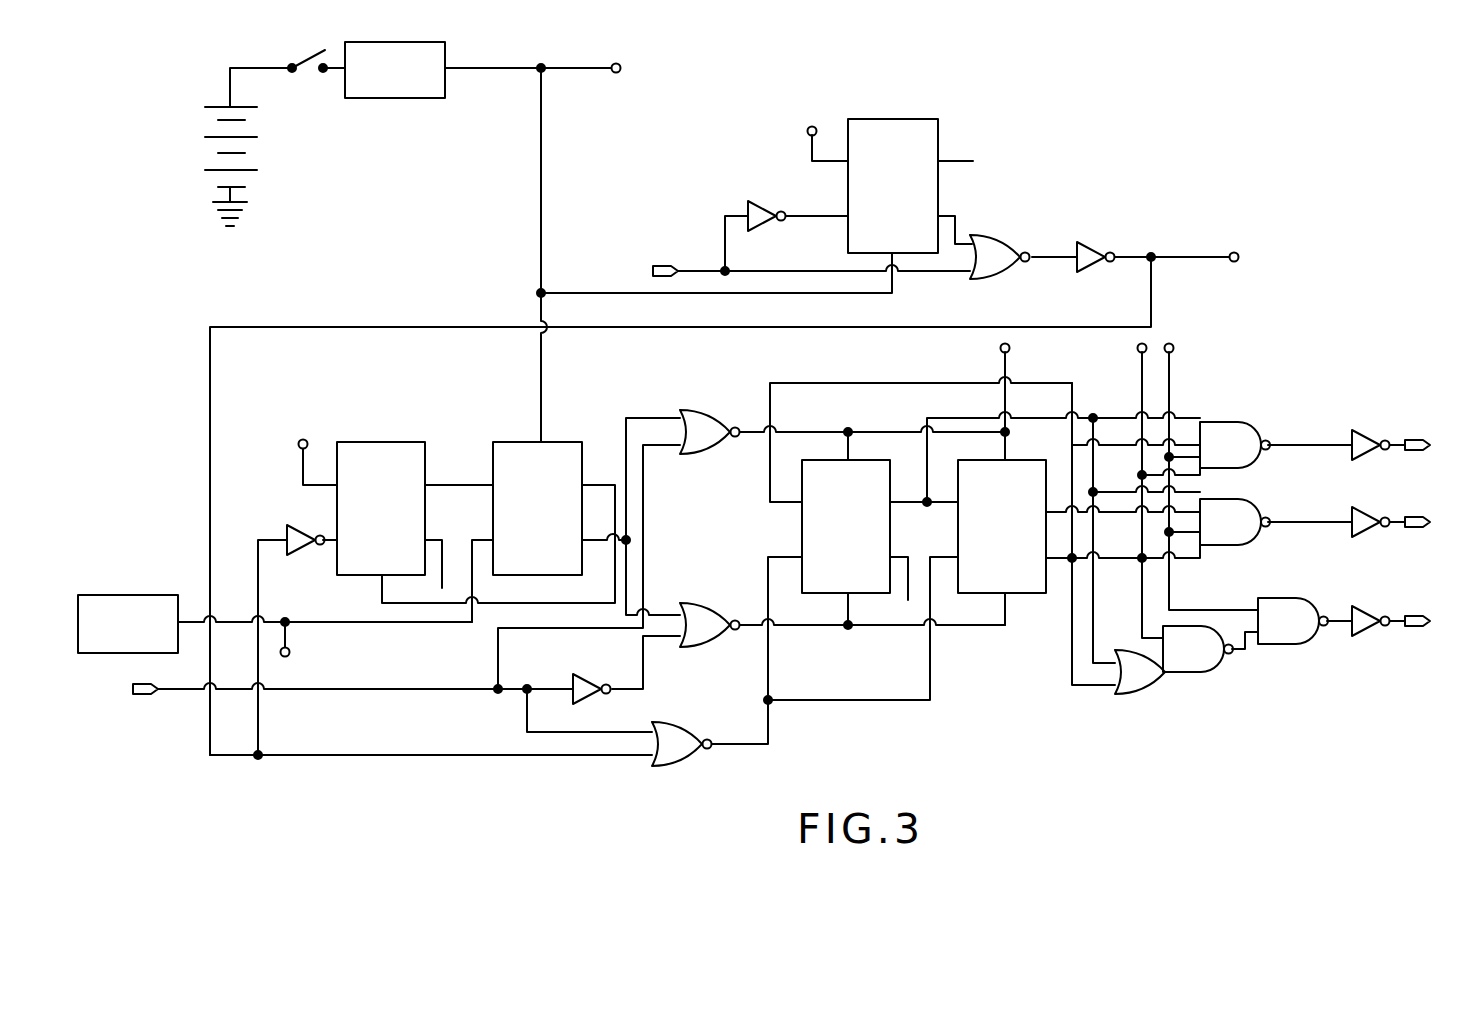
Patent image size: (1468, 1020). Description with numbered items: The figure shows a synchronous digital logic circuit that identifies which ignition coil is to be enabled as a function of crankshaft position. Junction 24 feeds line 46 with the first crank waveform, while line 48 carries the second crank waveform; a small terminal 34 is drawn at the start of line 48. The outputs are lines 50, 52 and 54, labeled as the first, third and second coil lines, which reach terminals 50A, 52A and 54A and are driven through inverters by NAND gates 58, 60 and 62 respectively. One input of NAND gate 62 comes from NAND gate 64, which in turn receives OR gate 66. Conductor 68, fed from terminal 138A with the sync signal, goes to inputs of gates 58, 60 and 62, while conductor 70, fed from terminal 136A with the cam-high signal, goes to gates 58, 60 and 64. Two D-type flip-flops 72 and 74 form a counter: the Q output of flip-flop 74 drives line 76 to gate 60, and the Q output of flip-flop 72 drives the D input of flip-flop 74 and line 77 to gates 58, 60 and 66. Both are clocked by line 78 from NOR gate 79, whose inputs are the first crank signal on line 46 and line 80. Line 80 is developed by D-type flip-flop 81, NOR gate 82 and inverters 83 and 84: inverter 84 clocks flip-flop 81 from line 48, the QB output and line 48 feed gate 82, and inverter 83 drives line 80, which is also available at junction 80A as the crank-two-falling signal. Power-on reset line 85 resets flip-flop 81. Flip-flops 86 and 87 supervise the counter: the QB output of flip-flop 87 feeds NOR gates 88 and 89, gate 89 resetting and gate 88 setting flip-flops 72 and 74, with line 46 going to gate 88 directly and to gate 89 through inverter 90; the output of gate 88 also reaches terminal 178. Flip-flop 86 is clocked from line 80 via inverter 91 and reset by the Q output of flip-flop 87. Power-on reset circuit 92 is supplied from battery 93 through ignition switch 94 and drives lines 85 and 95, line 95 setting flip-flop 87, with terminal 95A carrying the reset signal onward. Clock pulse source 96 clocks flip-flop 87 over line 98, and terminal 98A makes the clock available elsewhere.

The junction 24 is at (150, 694).
The input terminal 34 is at (668, 263).
The line 46 is at (410, 692).
The line 48 is at (703, 268).
The line 50 is at (1392, 440).
The terminal 50A is at (1428, 447).
The line 52 is at (1395, 515).
The terminal 52A is at (1445, 510).
The line 54 is at (1395, 612).
The terminal 54A is at (1428, 620).
The NAND gate 58 is at (1245, 425).
The NAND gate 60 is at (1247, 502).
The NAND gate 62 is at (1288, 600).
The NAND gate 64 is at (1215, 667).
The OR gate 66 is at (1145, 680).
The line 68 is at (1178, 385).
The conductor 70 is at (1115, 385).
The D-type flip-flop 72 is at (802, 542).
The D-type flip-flop 74 is at (1023, 462).
The line 76 is at (1118, 515).
The line 77 is at (957, 415).
The line 78 is at (738, 740).
The NOR gate 79 is at (672, 756).
The line 80 is at (390, 325).
The junction 80A is at (1236, 253).
The D-type flip-flop 81 is at (888, 120).
The NOR gate 82 is at (1010, 240).
The inverter 83 is at (1090, 245).
The inverter 84 is at (756, 200).
The power-on reset line 85 is at (585, 290).
The D-type flip-flop 86 is at (400, 442).
The D-type flip-flop 87 is at (562, 442).
The NOR gate 88 is at (712, 415).
The NOR gate 89 is at (712, 608).
The inverter 90 is at (588, 675).
The inverter 91 is at (305, 528).
The power-on reset circuit 92 is at (420, 40).
The battery 93 is at (245, 135).
The ignition switch 94 is at (302, 72).
The line 95 is at (537, 396).
The terminal 95A is at (622, 64).
The clock pulse source 96 is at (160, 594).
The line 98 is at (338, 625).
The terminal 98A is at (288, 656).
The terminal 136A is at (1146, 344).
The terminal 138A is at (1172, 344).
The terminal 178 is at (1000, 350).